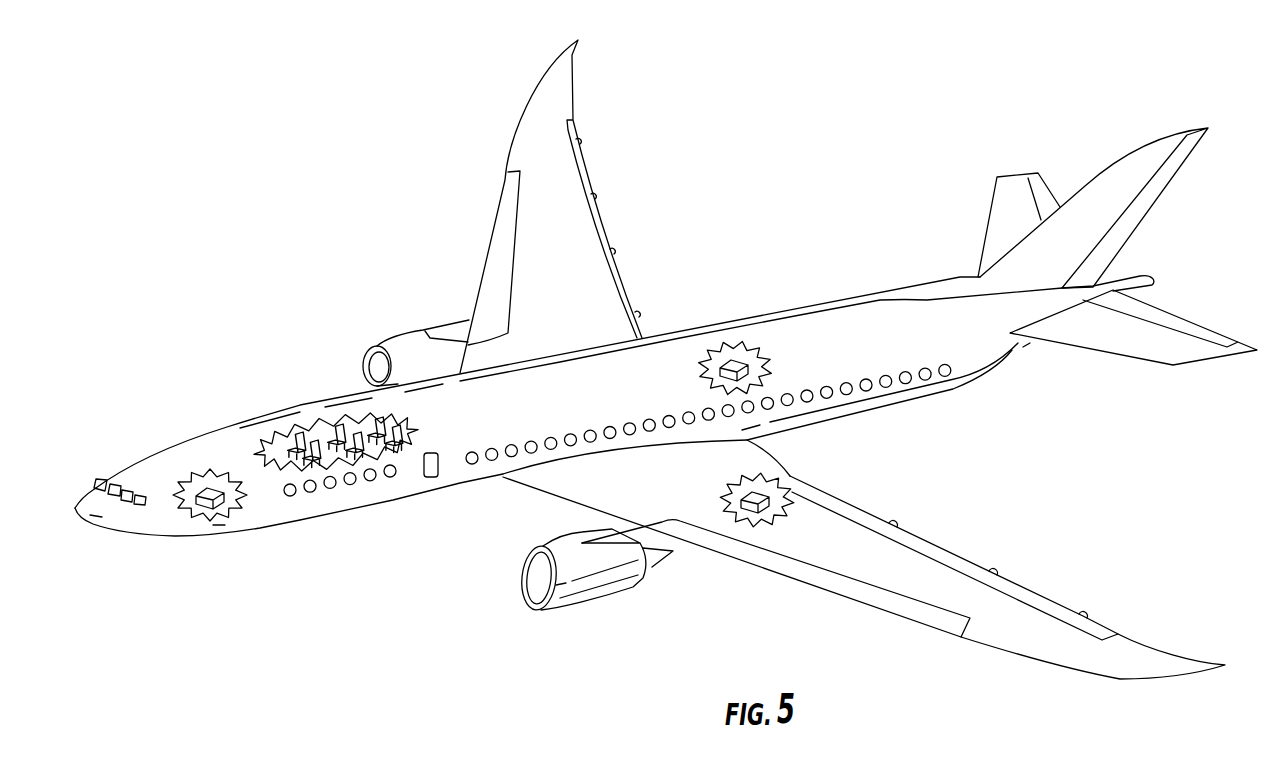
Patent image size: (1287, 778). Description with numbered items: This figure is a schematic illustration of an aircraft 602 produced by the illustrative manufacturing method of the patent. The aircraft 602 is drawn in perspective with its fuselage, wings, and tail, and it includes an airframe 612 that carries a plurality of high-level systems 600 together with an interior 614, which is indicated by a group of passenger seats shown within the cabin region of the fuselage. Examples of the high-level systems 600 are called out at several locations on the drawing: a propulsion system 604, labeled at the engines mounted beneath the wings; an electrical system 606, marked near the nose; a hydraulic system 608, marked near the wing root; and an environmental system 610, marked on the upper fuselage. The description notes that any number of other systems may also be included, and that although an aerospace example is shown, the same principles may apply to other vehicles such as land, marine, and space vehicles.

The high-level systems 600 is at (666, 359).
The aircraft 602 is at (320, 245).
The propulsion system 604 is at (413, 338).
The electrical system 606 is at (208, 477).
The hydraulic system 608 is at (765, 482).
The environmental system 610 is at (731, 358).
The airframe 612 is at (337, 434).
The interior 614 is at (322, 456).